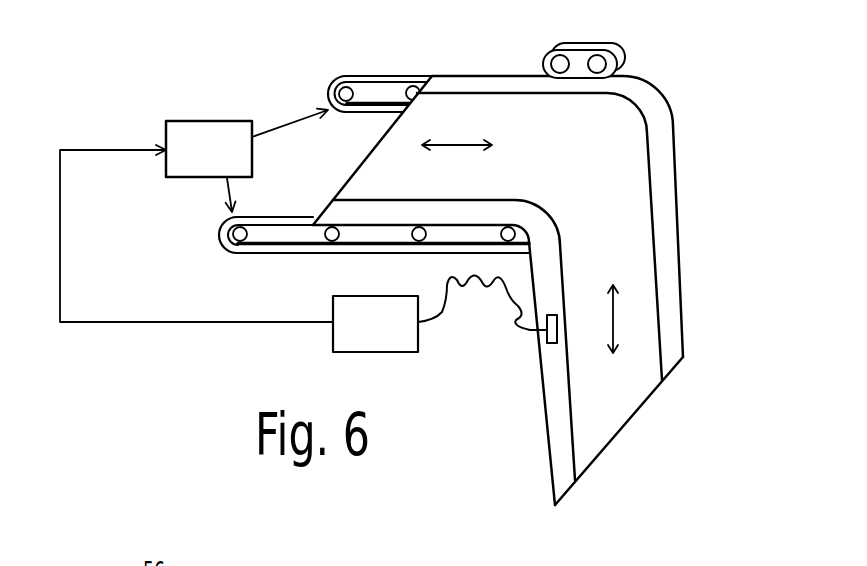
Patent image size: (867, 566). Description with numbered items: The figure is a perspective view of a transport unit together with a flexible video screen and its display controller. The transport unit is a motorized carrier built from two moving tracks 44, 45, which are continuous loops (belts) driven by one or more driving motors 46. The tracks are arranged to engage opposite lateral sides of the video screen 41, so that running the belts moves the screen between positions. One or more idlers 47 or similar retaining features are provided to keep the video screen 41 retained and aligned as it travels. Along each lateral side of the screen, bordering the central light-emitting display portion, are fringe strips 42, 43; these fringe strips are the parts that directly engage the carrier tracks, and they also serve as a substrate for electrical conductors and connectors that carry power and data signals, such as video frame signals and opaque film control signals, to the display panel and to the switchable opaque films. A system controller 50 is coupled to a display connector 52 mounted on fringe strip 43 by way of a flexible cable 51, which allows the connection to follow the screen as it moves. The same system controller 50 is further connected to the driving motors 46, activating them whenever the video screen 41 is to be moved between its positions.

The video screen 41 is at (639, 393).
The fringe strip 42 is at (660, 222).
The fringe strip 43 is at (565, 469).
The moving track 44 is at (230, 265).
The moving track 45 is at (334, 64).
The driving motor 46 is at (222, 162).
The idler 47 is at (636, 55).
The system controller 50 is at (389, 336).
The flexible cable 51 is at (447, 318).
The display connector 52 is at (543, 345).